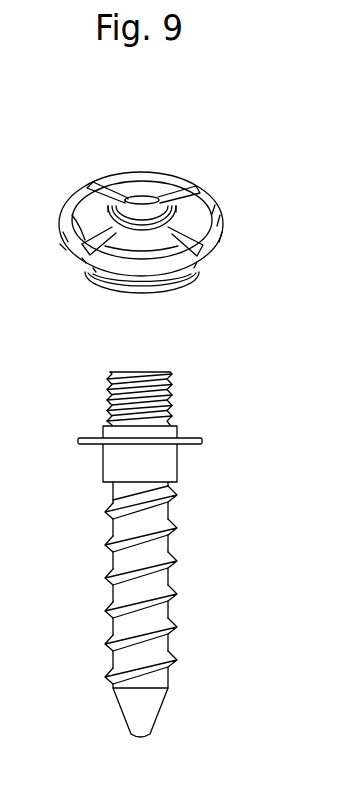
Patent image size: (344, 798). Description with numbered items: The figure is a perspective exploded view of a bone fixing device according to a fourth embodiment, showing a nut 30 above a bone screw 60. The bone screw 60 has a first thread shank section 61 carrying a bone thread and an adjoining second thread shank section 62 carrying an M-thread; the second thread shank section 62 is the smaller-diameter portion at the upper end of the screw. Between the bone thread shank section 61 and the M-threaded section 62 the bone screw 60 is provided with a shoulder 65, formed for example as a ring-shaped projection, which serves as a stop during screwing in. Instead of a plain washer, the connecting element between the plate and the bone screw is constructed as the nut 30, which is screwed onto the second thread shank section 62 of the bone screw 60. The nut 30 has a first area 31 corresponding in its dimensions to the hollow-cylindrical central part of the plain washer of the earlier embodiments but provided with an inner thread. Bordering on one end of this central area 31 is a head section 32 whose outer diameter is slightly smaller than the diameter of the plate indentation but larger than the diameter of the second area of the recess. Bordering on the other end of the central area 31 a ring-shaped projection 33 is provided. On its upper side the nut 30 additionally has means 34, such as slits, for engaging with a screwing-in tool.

The nut 30 is at (151, 208).
The first area 31 is at (135, 283).
The head section 32 is at (82, 213).
The ring-shaped projection 33 is at (183, 282).
The means for engaging with a screwing-in tool 34 is at (118, 190).
The bone screw 60 is at (144, 554).
The first thread shank section 61 is at (113, 580).
The second thread shank section 62 is at (107, 401).
The shoulder 65 is at (84, 445).